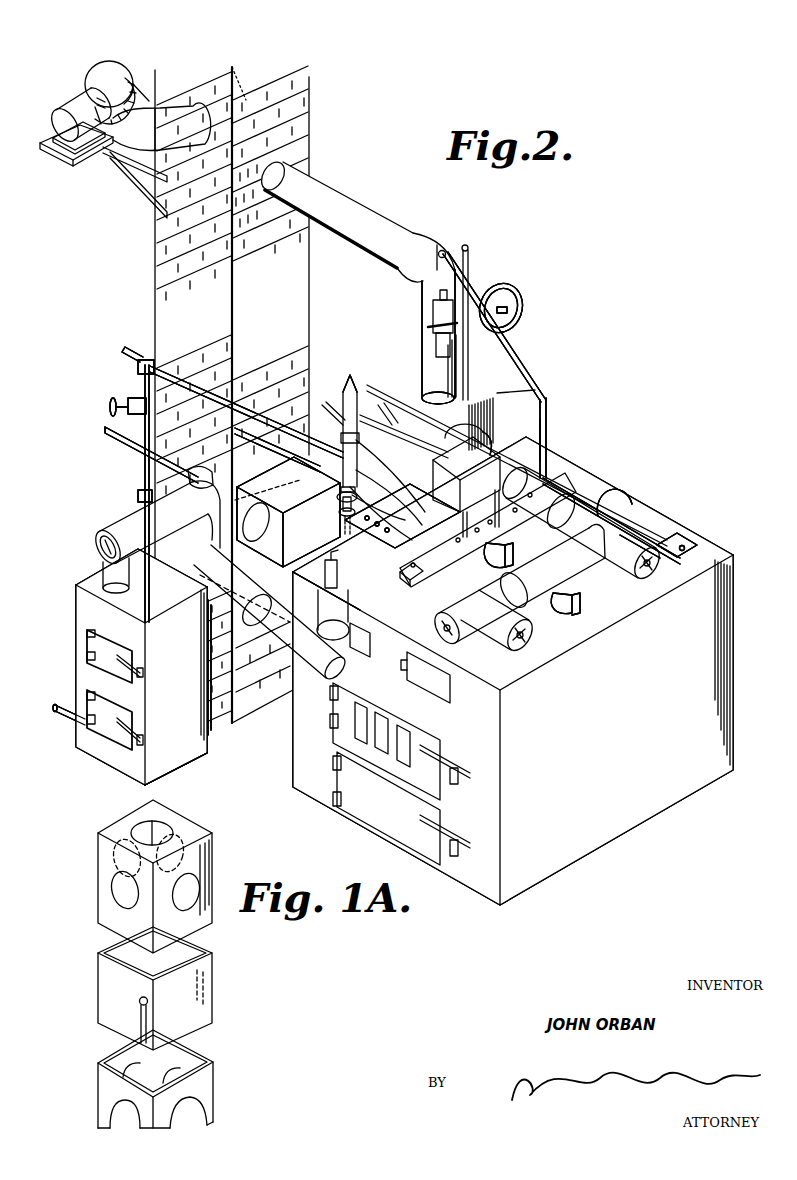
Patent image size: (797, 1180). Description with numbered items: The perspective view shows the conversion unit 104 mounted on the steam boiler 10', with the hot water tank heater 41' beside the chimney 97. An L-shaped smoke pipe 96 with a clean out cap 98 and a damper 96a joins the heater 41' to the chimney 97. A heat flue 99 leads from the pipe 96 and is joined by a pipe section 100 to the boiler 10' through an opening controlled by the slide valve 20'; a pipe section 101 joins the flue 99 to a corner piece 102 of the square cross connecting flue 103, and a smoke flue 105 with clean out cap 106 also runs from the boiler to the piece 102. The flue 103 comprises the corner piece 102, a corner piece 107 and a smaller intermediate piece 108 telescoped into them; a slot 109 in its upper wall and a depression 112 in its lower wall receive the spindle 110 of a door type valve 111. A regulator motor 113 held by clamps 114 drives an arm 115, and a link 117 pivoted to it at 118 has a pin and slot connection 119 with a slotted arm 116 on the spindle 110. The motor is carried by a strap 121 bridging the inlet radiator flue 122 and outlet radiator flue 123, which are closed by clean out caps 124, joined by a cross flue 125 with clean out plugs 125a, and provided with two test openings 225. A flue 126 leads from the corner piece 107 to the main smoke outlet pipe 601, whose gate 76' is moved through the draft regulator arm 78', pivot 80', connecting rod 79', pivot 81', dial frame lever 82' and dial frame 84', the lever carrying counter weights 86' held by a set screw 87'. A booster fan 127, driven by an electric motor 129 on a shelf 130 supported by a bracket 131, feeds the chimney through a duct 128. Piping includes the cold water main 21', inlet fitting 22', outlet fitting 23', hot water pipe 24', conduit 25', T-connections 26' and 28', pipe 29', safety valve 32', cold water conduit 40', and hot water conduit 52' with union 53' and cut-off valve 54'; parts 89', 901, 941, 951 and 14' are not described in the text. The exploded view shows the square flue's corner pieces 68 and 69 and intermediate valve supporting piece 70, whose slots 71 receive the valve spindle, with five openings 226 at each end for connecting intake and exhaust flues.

In FIG. 2, the chimney 97 is at (154, 247).
In FIG. 2, the booster fan 127 is at (130, 62).
In FIG. 2, the duct 128 is at (152, 122).
In FIG. 2, the electric motor 129 is at (74, 100).
In FIG. 2, the shelf 130 is at (53, 157).
In FIG. 2, the bracket 131 is at (118, 168).
In FIG. 2, the main smoke outlet pipe 601 is at (370, 205).
In FIG. 2, the vertical cylinder 89' is at (424, 337).
In FIG. 2, the flue 126 is at (458, 378).
In FIG. 2, the post 941 is at (470, 262).
In FIG. 2, the knob 951 is at (445, 252).
In FIG. 2, the valve 901 is at (458, 305).
In FIG. 2, the elongated gate 76' is at (515, 300).
In FIG. 2, the draft regulator arm 78' is at (505, 327).
In FIG. 2, the square cross connecting flue 103 is at (514, 396).
In FIG. 2, the pivot connection 80' is at (570, 429).
In FIG. 2, the dial frame connecting rod 79' is at (572, 430).
In FIG. 2, the pivot connection 81' is at (611, 498).
In FIG. 2, the outlet radiator flue 123 is at (575, 480).
In FIG. 2, the dial frame 84' is at (635, 491).
In FIG. 2, the dial frame lever 82' is at (661, 522).
In FIG. 2, the counter weights 86' is at (690, 531).
In FIG. 2, the set screw 87' is at (716, 537).
In FIG. 2, the conversion unit 104 is at (612, 580).
In FIG. 2, the cross flue 125 is at (490, 590).
In FIG. 2, the clean out plugs 125a is at (510, 640).
In FIG. 2, the clean out caps 124 is at (655, 565).
In FIG. 2, the clamp 14' is at (550, 578).
In FIG. 2, the strap 121 is at (507, 522).
In FIG. 2, the inlet radiator flue 122 is at (412, 582).
In FIG. 2, the regulator magnetic solenoid or electric motor 113 is at (498, 462).
In FIG. 2, the arm 115 is at (460, 482).
In FIG. 2, the pivotal connection 118 is at (452, 458).
In FIG. 2, the cold water inlet fitting 22' is at (504, 435).
In FIG. 2, the openings 225 is at (480, 425).
In FIG. 2, the end or corner piece 107 is at (470, 400).
In FIG. 2, the slotted arm 116 is at (352, 390).
In FIG. 2, the safety valve 32' is at (349, 360).
In FIG. 2, the clamps 114 is at (336, 414).
In FIG. 2, the T-connection 28' is at (240, 397).
In FIG. 2, the hot water pipe 24' is at (277, 424).
In FIG. 2, the pipe 29' is at (100, 355).
In FIG. 2, the cut-off valve 54' is at (98, 399).
In FIG. 2, the hot water conduit 52' is at (115, 493).
In FIG. 2, the union 53' is at (115, 495).
In FIG. 2, the cold water main 21' is at (123, 455).
In FIG. 2, the damper 96a is at (202, 468).
In FIG. 2, the L-shaped smoke pipe 96 is at (105, 530).
In FIG. 2, the clean out cap 98 is at (100, 548).
In FIG. 2, the end or corner piece 102 is at (265, 525).
In FIG. 2, the heat flue 99 is at (322, 675).
In FIG. 2, the clean out cap 106 is at (245, 630).
In FIG. 2, the pipe section 101 is at (200, 583).
In FIG. 2, the pipe section 100 is at (350, 655).
In FIG. 2, the smoke flue 105 is at (330, 563).
In FIG. 2, the slide valve 20' is at (341, 593).
In FIG. 2, the hot water conduit 25' is at (288, 485).
In FIG. 2, the T-connection 26' is at (288, 520).
In FIG. 2, the door type valve 111 is at (315, 498).
In FIG. 2, the outlet fitting 23' is at (402, 523).
In FIG. 2, the pin and slot connection 119 is at (392, 423).
In FIG. 2, the link 117 is at (405, 423).
In FIG. 2, the spindle 110 is at (415, 510).
In FIG. 2, the slot 109 is at (412, 525).
In FIG. 2, the intermediate piece 108 is at (403, 538).
In FIG. 2, the depression 112 is at (405, 520).
In FIG. 2, the boiler 10' is at (513, 671).
In FIG. 2, the cold water conduit 40' is at (121, 667).
In FIG. 2, the hot water tank heater 41' is at (185, 769).
In FIG. 1A, the end or corner piece 68 is at (110, 825).
In FIG. 1A, the openings 226 is at (165, 833).
In FIG. 1A, the intermediate valve supporting piece 70 is at (97, 975).
In FIG. 1A, the slots 71 is at (146, 1030).
In FIG. 1A, the end or corner piece 69 is at (97, 1090).